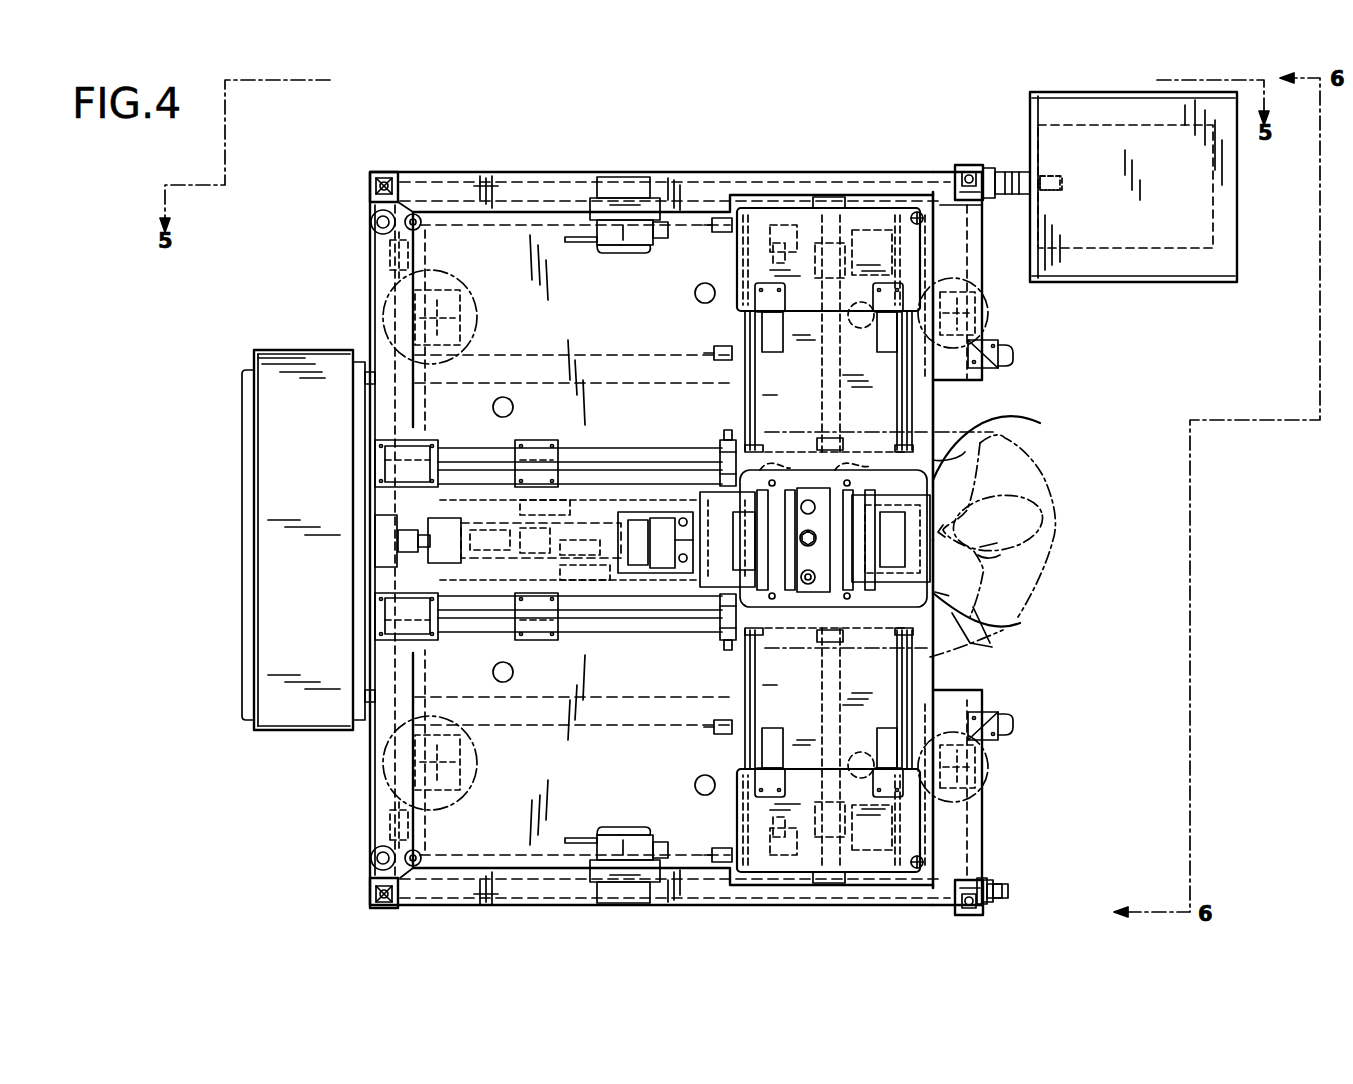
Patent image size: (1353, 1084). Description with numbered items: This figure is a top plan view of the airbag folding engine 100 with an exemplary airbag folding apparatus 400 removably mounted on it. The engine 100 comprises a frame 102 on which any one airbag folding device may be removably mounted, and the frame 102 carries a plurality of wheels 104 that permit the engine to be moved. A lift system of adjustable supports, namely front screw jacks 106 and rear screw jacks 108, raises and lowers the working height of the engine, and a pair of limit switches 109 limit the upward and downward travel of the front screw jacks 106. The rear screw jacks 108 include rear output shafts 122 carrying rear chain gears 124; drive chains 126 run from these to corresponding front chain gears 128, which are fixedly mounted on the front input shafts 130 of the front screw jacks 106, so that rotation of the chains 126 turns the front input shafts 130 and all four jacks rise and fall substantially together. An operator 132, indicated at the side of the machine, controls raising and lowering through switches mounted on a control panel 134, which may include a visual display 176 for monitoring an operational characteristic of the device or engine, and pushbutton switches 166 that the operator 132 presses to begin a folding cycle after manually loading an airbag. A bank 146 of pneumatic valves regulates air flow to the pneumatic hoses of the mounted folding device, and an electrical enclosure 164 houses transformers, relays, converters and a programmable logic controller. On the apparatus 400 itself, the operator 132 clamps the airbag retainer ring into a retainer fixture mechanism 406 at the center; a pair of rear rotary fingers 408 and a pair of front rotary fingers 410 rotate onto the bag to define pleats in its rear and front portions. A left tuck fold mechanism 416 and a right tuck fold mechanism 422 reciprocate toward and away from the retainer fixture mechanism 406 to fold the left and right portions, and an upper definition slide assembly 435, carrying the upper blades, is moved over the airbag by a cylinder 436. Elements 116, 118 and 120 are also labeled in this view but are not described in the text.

The airbag folding engine 100 is at (417, 152).
The frame 102 is at (577, 712).
The wheels 104 is at (480, 298).
The front screw jacks 106 is at (1023, 190).
The rear screw jacks 108 is at (378, 220).
The limit switches 109 is at (938, 200).
The side rail 116 is at (372, 345).
The bracket 118 is at (390, 255).
The inner rail 120 is at (420, 237).
The rear output shafts 122 is at (415, 214).
The rear chain gears 124 is at (393, 170).
The drive chains 126 is at (548, 172).
The front chain gears 128 is at (966, 163).
The front input shafts 130 is at (1000, 893).
The operator 132 is at (1062, 528).
The control panel 134 is at (1187, 295).
The bank of pneumatic valves 146 is at (622, 265).
The electrical enclosure 164 is at (290, 445).
The switches 166 is at (1014, 347).
The visual display 176 is at (1115, 285).
The airbag folding apparatus 400 is at (763, 133).
The retainer fixture mechanism 406 is at (808, 500).
The rear rotary fingers 408 is at (722, 462).
The front rotary fingers 410 is at (1007, 536).
The left tuck fold mechanism 416 is at (940, 680).
The right tuck fold mechanism 422 is at (935, 412).
The upper definition slide assembly 435 is at (657, 607).
The cylinder 436 is at (485, 540).